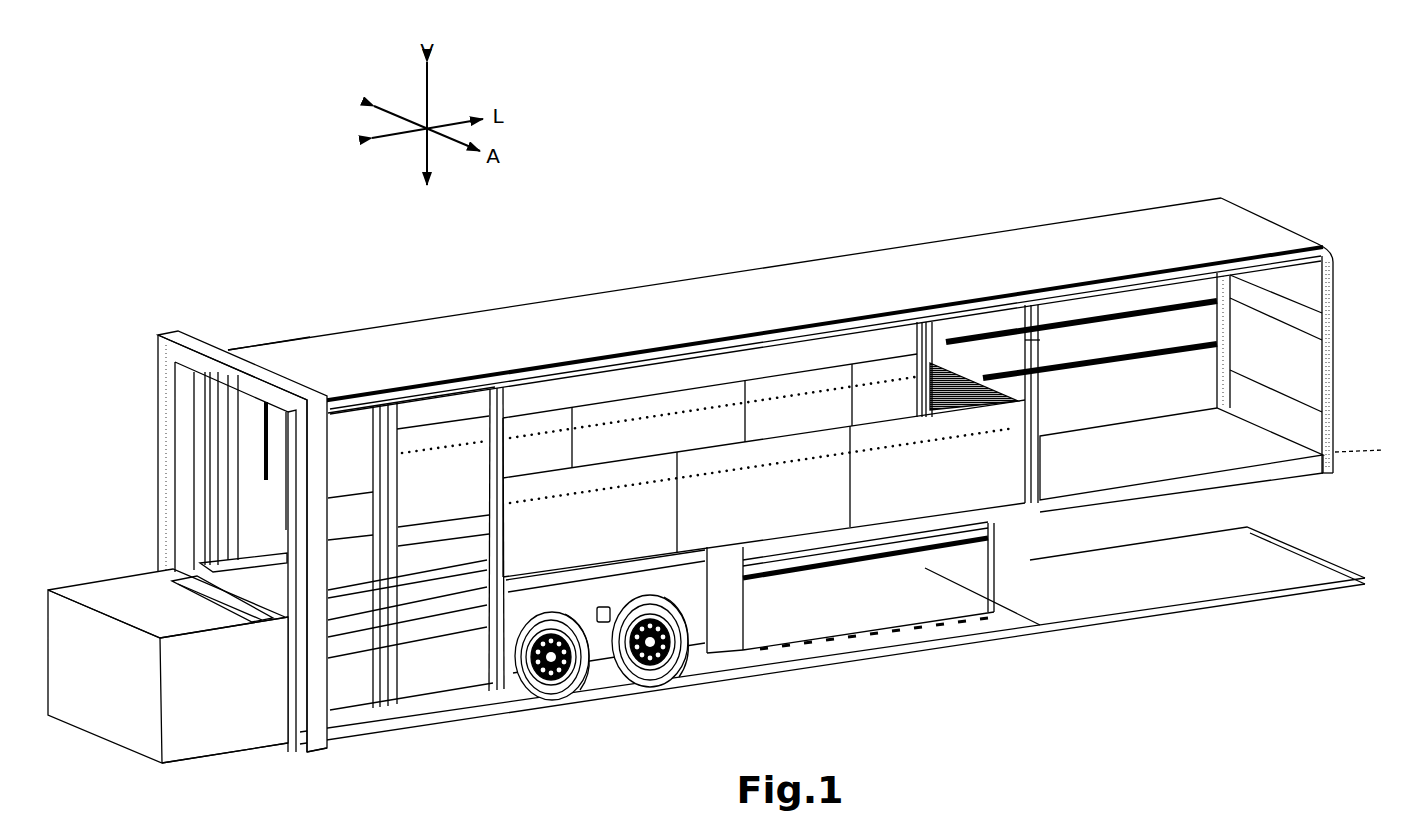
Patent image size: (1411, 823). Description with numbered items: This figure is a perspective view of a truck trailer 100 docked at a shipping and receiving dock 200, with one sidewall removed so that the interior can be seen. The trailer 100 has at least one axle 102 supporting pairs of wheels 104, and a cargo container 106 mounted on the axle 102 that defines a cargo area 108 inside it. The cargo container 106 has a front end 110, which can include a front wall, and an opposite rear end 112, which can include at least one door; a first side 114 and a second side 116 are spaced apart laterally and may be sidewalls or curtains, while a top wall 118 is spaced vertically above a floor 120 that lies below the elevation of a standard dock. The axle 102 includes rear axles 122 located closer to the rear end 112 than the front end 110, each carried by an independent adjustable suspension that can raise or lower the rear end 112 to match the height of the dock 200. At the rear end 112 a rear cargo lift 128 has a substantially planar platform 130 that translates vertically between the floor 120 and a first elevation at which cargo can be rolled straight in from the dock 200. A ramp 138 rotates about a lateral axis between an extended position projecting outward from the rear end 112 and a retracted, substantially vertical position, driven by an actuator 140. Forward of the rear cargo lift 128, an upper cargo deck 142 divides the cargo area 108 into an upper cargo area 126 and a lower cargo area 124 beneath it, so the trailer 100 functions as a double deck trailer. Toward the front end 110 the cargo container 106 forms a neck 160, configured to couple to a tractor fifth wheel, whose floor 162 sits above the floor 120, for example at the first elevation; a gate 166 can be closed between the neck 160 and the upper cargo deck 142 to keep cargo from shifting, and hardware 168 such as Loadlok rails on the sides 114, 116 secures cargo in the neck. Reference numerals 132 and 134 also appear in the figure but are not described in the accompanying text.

The truck trailer 100 is at (688, 208).
The axle 102 is at (553, 680).
The wheels 104 is at (638, 682).
The cargo container 106 is at (803, 298).
The cargo area 108 is at (250, 423).
The front end 110 is at (1264, 217).
The rear end 112 is at (270, 360).
The first side 114 is at (873, 250).
The second side 116 is at (985, 297).
The top wall 118 is at (1062, 247).
The floor 120 is at (863, 605).
The rear axle 122 is at (662, 664).
The lower cargo area 124 is at (918, 602).
The upper cargo area 126 is at (606, 372).
The rear cargo lift 128 is at (232, 575).
The platform 130 is at (343, 573).
The lift rail 132 is at (257, 557).
The support column 134 is at (363, 560).
The ramp 138 is at (202, 582).
The actuator 140 is at (220, 560).
The upper cargo deck 142 is at (650, 505).
The neck 160 is at (1261, 488).
The floor 162 is at (1248, 442).
The gate 166 is at (945, 362).
The hardware 168 is at (1120, 352).
The shipping and receiving dock 200 is at (142, 597).